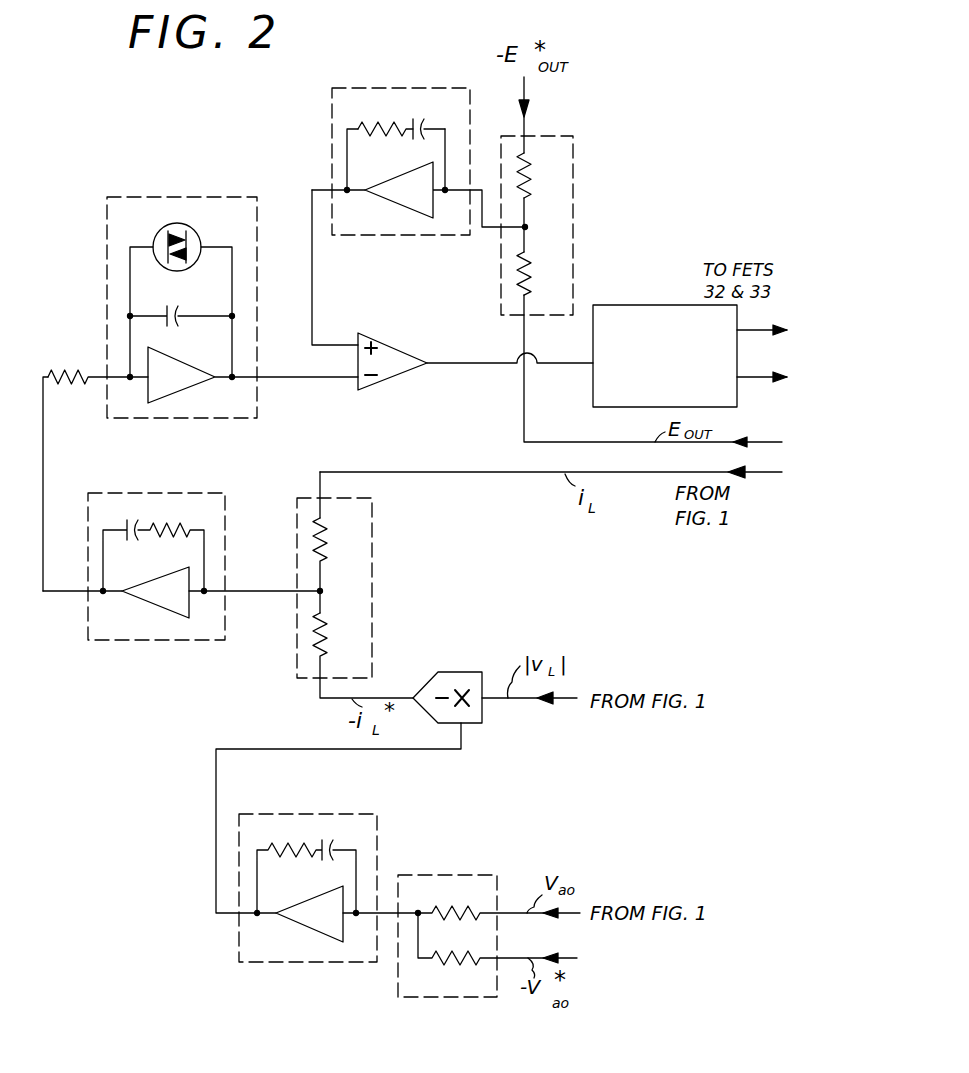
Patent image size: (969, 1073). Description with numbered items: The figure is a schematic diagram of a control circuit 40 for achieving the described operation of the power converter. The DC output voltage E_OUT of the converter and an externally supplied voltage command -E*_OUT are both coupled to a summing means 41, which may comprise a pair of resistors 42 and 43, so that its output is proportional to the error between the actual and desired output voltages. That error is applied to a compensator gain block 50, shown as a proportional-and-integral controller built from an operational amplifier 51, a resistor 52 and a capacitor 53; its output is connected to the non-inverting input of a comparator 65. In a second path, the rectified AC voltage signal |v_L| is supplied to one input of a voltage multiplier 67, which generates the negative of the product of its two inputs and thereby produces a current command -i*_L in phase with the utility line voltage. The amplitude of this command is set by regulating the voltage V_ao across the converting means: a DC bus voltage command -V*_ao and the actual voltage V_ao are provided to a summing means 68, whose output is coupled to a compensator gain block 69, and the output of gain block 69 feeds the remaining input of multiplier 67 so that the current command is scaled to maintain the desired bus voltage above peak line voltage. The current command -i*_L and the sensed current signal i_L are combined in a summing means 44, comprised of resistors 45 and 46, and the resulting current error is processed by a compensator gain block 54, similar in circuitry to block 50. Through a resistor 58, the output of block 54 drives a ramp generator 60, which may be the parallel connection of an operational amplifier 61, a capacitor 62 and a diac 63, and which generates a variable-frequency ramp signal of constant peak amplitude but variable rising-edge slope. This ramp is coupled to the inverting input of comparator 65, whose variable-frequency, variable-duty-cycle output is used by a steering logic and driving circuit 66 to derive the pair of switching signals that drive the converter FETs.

The control circuit 40 is at (468, 427).
The summing means 41 is at (641, 262).
The resistor 42 is at (529, 174).
The resistor 43 is at (540, 280).
The summing means 44 is at (360, 585).
The resistor 45 is at (324, 529).
The resistor 46 is at (332, 655).
The compensator gain block 50 is at (406, 161).
The operational amplifier 51 is at (390, 206).
The resistor 52 is at (386, 126).
The capacitor 53 is at (421, 128).
The compensator gain block 54 is at (225, 540).
The resistor 58 is at (60, 369).
The ramp generator 60 is at (232, 289).
The operational amplifier 61 is at (178, 366).
The capacitor 62 is at (181, 311).
The diac 63 is at (201, 232).
The comparator 65 is at (376, 346).
The steering logic and driving circuit 66 is at (633, 304).
The voltage multiplier 67 is at (460, 672).
The summing means 68 is at (448, 874).
The compensator gain block 69 is at (316, 814).